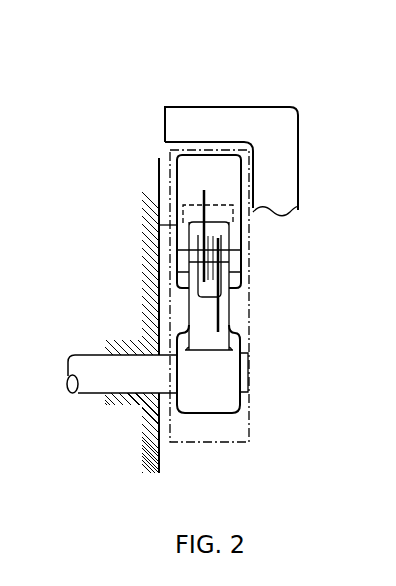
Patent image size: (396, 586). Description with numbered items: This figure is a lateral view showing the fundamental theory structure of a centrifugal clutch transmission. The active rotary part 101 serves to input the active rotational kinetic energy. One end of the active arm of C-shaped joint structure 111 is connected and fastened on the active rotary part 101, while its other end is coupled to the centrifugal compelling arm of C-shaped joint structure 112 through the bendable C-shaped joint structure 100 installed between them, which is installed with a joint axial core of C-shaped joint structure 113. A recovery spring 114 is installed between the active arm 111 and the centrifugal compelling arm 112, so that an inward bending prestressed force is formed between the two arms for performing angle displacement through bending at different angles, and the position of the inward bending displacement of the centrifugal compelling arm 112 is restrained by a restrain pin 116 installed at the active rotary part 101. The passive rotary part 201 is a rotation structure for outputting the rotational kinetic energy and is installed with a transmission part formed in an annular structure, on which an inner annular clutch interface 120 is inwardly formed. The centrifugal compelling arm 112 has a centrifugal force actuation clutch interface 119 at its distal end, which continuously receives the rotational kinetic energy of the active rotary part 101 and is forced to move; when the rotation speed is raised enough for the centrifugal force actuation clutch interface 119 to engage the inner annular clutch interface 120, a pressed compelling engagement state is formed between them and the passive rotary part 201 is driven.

The bendable C-shaped joint structure 100 is at (250, 418).
The active rotary part 101 is at (93, 380).
The active arm of C-shaped joint structure 111 is at (200, 315).
The centrifugal compelling arm of C-shaped joint structure 112 is at (243, 229).
The joint axial core of C-shaped joint structure 113 is at (177, 263).
The recovery spring 114 is at (217, 312).
The restrain pin 116 is at (215, 200).
The centrifugal force actuation clutch interface 119 is at (204, 190).
The inner annular clutch interface 120 is at (202, 152).
The passive rotary part 201 is at (232, 124).